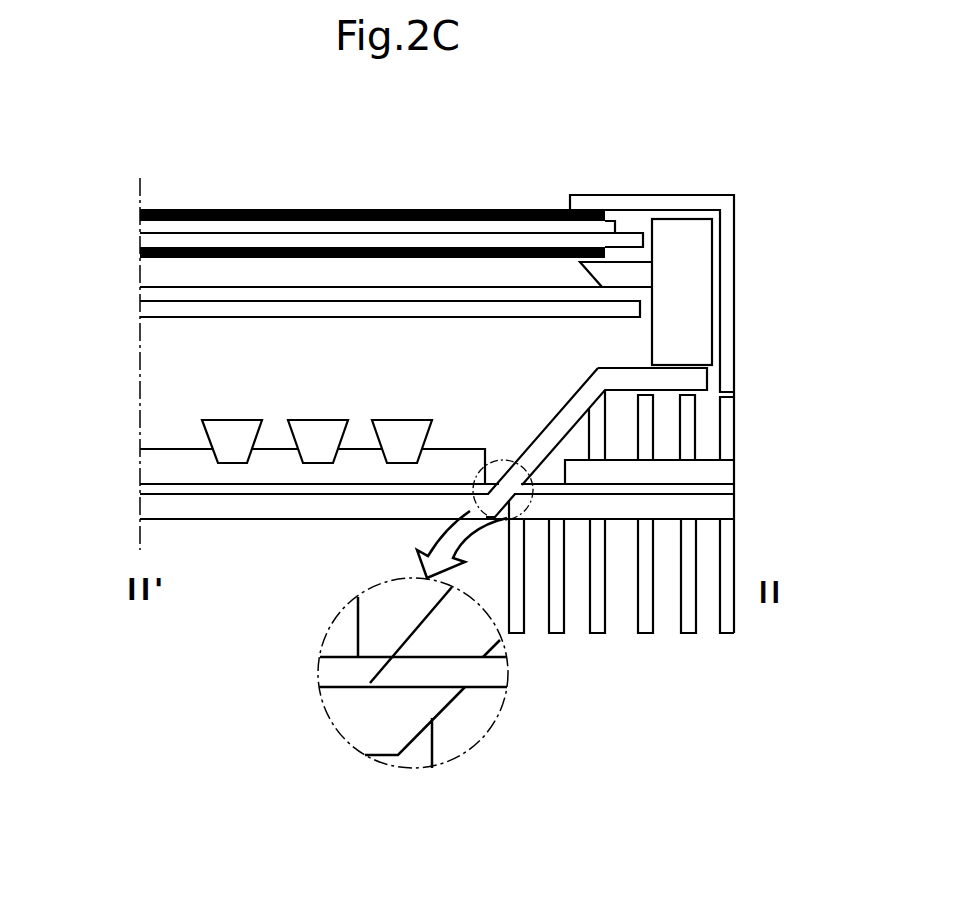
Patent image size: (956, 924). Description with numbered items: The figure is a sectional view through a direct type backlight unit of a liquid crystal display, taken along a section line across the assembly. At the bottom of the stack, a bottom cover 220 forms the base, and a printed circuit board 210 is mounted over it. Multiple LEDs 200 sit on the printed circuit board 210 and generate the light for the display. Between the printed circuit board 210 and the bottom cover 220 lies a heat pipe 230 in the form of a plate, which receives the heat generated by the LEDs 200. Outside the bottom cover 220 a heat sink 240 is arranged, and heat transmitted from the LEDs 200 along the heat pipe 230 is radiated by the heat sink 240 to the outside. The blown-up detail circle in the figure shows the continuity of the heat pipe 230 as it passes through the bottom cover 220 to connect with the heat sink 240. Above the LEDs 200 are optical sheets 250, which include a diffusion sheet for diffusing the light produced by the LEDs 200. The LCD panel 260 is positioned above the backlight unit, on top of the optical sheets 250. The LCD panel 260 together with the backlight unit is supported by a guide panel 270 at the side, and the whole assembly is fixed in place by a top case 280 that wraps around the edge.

The LEDs 200 is at (231, 430).
The printed circuit board 210 is at (147, 454).
The bottom cover 220 is at (243, 503).
The heat pipe 230 is at (143, 490).
The heat sink 240 is at (730, 550).
The optical sheets 250 is at (137, 287).
The LCD panel 260 is at (137, 210).
The guide panel 270 is at (703, 318).
The top case 280 is at (727, 263).